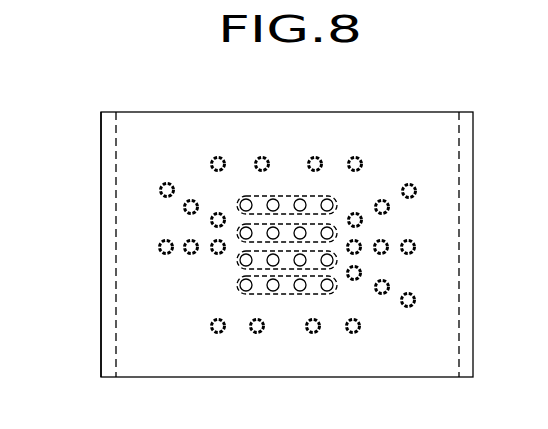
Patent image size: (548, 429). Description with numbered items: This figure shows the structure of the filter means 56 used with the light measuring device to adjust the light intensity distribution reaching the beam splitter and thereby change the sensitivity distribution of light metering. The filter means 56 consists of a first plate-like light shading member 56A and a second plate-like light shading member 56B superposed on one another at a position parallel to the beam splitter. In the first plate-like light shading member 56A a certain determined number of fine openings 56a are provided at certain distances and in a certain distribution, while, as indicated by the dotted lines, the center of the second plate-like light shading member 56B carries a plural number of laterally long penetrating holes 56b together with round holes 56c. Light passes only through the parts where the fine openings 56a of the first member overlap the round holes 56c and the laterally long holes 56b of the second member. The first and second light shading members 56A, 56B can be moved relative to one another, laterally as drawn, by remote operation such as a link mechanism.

The filter means 56 is at (429, 112).
The first plate-like light shading member 56A is at (101, 175).
The second plate-like light shading member 56B is at (116, 249).
The fine openings 56a is at (164, 184).
The laterally long penetrating holes 56b is at (292, 195).
The round holes 56c is at (172, 182).